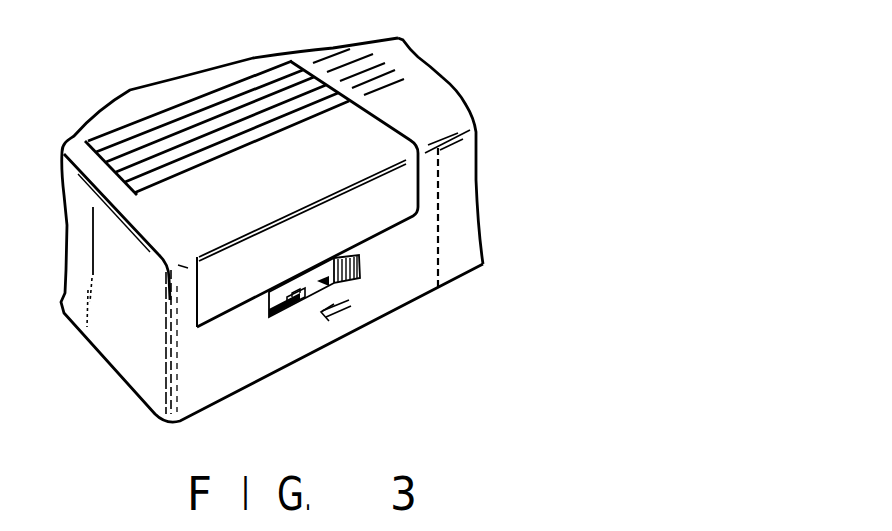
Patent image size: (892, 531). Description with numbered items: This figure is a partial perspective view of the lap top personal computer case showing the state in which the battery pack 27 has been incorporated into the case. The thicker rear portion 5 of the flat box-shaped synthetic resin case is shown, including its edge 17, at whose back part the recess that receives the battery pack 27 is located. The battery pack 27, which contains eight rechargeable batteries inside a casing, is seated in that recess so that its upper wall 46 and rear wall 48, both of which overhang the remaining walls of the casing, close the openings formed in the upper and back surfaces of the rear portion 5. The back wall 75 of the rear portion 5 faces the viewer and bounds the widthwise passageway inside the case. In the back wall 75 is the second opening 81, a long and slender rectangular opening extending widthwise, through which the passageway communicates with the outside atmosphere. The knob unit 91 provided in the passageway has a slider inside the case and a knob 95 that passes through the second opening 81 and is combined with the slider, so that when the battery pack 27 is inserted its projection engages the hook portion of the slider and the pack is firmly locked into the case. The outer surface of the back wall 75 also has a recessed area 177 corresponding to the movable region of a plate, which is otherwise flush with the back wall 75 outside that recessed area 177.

The rear portion 5 is at (349, 338).
The edge 17 is at (460, 135).
The battery pack 27 is at (374, 142).
The upper wall 46 is at (272, 145).
The rear wall 48 is at (208, 292).
The back wall 75 is at (467, 263).
The second opening 81 is at (296, 307).
The knob unit 91 is at (362, 282).
The knob 95 is at (345, 256).
The recessed area 177 is at (274, 312).